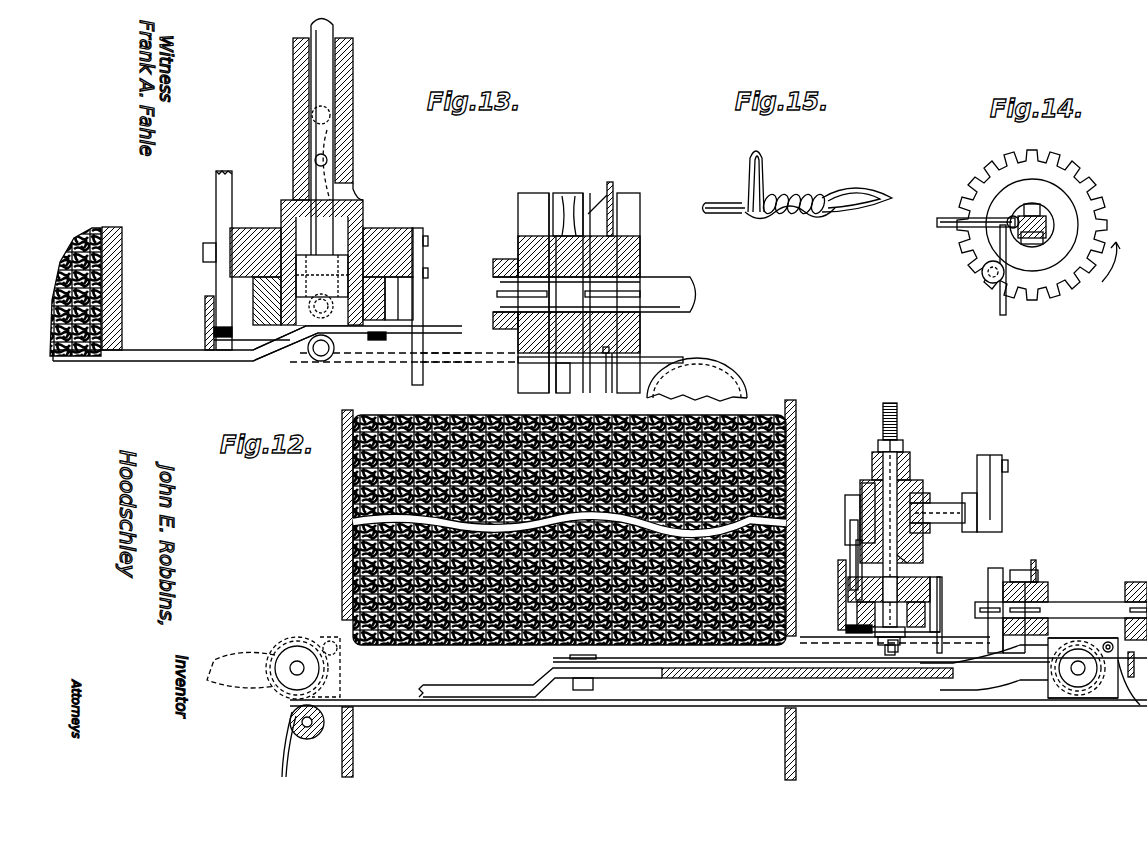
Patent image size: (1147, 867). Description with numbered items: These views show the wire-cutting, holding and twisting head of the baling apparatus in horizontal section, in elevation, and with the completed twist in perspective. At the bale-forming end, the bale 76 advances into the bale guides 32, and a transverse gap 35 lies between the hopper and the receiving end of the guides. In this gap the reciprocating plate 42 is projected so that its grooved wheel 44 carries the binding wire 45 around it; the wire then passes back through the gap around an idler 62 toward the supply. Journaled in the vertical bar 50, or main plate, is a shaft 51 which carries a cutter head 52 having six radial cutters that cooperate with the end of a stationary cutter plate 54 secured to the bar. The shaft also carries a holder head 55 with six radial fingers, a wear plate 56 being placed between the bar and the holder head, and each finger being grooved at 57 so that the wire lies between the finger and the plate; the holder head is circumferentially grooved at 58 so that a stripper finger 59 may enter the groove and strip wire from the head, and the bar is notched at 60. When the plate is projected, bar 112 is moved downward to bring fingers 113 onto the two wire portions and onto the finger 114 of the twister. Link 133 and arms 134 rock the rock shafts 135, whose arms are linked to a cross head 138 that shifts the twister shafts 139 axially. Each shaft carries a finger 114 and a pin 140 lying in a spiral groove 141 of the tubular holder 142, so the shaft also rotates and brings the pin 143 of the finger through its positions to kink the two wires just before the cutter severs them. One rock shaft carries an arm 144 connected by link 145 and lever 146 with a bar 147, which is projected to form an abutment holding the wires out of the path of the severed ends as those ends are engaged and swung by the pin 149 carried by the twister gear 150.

In FIG. 12, the bale guides 32 is at (342, 572).
In FIG. 12, the transverse gap 35 is at (405, 706).
In FIG. 12, the reciprocating plate 42 is at (690, 680).
In FIG. 13, the grooved wheel 44 is at (740, 380).
In FIG. 13, the binding wire 45 is at (240, 362).
In FIG. 15, the binding wire 45 is at (712, 202).
In FIG. 14, the binding wire 45 is at (938, 218).
In FIG. 13, the vertical bar 50 is at (562, 196).
In FIG. 12, the vertical bar 50 is at (1021, 570).
In FIG. 13, the shaft 51 is at (697, 290).
In FIG. 12, the shaft 51 is at (1092, 602).
In FIG. 13, the cutter head 52 is at (518, 198).
In FIG. 12, the cutter head 52 is at (996, 568).
In FIG. 13, the stationary cutter plate 54 is at (525, 395).
In FIG. 13, the holder head 55 is at (640, 240).
In FIG. 12, the holder head 55 is at (1048, 582).
In FIG. 13, the wear plate 56 is at (583, 193).
In FIG. 13, the groove 57 is at (615, 197).
In FIG. 13, the circumferential groove 58 is at (609, 385).
In FIG. 13, the stripper finger 59 is at (611, 182).
In FIG. 13, the notch 60 is at (570, 385).
In FIG. 12, the idler 62 is at (288, 724).
In FIG. 12, the bale 76 is at (353, 503).
In FIG. 13, the bar 112 is at (410, 228).
In FIG. 12, the bar 112 is at (930, 577).
In FIG. 12, the fingers 113 is at (920, 660).
In FIG. 13, the finger 114 is at (333, 365).
In FIG. 14, the finger 114 is at (1030, 242).
In FIG. 12, the finger 114 is at (898, 655).
In FIG. 12, the link 133 is at (995, 458).
In FIG. 12, the arms 134 is at (985, 510).
In FIG. 12, the rock shafts 135 is at (935, 503).
In FIG. 12, the cross head 138 is at (905, 460).
In FIG. 13, the shafts 139 is at (330, 100).
In FIG. 12, the shafts 139 is at (888, 403).
In FIG. 13, the pin 140 is at (315, 160).
In FIG. 12, the pin 140 is at (908, 556).
In FIG. 13, the spiral groove 141 is at (358, 187).
In FIG. 13, the tubular holder 142 is at (338, 156).
In FIG. 14, the tubular holder 142 is at (1060, 200).
In FIG. 12, the tubular holder 142 is at (870, 485).
In FIG. 13, the pin 143 is at (310, 360).
In FIG. 14, the pin 143 is at (1036, 210).
In FIG. 12, the pin 143 is at (888, 648).
In FIG. 12, the arm 144 is at (850, 511).
In FIG. 12, the link 145 is at (850, 540).
In FIG. 13, the lever 146 is at (216, 204).
In FIG. 12, the lever 146 is at (856, 560).
In FIG. 13, the bar 147 is at (205, 320).
In FIG. 12, the bar 147 is at (840, 605).
In FIG. 13, the pin 149 is at (380, 345).
In FIG. 14, the pin 149 is at (985, 282).
In FIG. 12, the pin 149 is at (942, 620).
In FIG. 13, the twister gear 150 is at (380, 308).
In FIG. 14, the twister gear 150 is at (1102, 212).
In FIG. 12, the twister gear 150 is at (878, 635).